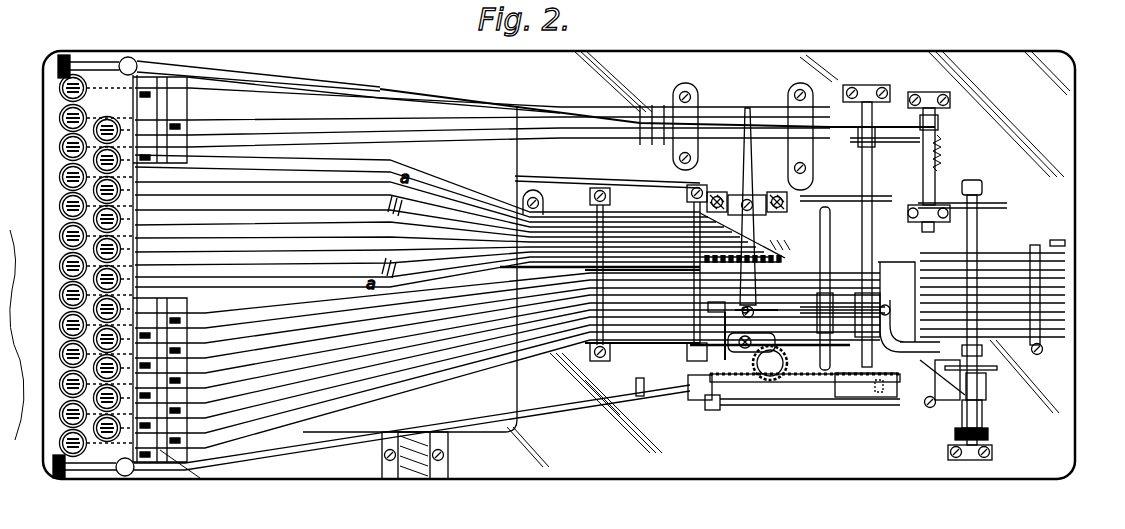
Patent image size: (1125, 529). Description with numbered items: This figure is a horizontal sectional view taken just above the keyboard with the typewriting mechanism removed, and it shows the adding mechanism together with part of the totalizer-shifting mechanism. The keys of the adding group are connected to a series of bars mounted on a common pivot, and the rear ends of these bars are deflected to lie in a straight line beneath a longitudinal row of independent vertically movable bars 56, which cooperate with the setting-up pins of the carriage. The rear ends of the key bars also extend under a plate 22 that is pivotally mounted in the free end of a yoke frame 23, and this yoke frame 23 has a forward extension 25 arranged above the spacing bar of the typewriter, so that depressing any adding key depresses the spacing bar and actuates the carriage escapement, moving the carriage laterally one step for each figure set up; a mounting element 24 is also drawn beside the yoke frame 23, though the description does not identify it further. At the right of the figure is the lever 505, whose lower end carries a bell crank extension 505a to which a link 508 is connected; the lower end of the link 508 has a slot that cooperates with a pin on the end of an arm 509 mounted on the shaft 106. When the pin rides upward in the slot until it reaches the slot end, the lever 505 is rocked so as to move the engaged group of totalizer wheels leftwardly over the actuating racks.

The plate 22 is at (687, 222).
The yoke frame 23 is at (612, 212).
The bracket 24 is at (538, 212).
The forward extension 25 is at (583, 345).
The vertically movable bars 56 is at (805, 213).
The shaft 106 is at (826, 355).
The lever 505 is at (722, 313).
The bell crank extension 505a is at (720, 348).
The link 508 is at (728, 352).
The arm 509 is at (788, 346).